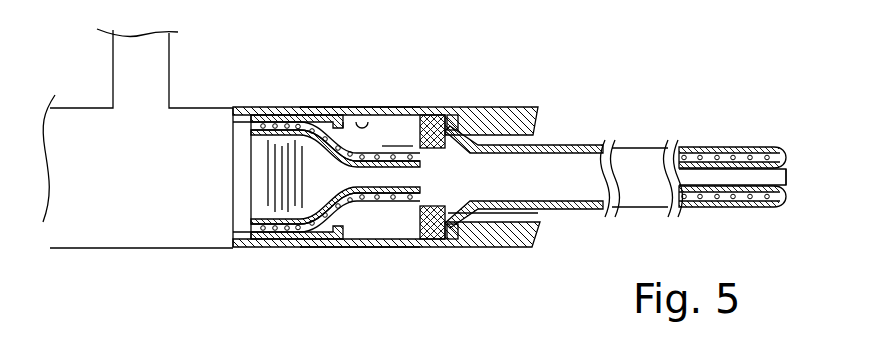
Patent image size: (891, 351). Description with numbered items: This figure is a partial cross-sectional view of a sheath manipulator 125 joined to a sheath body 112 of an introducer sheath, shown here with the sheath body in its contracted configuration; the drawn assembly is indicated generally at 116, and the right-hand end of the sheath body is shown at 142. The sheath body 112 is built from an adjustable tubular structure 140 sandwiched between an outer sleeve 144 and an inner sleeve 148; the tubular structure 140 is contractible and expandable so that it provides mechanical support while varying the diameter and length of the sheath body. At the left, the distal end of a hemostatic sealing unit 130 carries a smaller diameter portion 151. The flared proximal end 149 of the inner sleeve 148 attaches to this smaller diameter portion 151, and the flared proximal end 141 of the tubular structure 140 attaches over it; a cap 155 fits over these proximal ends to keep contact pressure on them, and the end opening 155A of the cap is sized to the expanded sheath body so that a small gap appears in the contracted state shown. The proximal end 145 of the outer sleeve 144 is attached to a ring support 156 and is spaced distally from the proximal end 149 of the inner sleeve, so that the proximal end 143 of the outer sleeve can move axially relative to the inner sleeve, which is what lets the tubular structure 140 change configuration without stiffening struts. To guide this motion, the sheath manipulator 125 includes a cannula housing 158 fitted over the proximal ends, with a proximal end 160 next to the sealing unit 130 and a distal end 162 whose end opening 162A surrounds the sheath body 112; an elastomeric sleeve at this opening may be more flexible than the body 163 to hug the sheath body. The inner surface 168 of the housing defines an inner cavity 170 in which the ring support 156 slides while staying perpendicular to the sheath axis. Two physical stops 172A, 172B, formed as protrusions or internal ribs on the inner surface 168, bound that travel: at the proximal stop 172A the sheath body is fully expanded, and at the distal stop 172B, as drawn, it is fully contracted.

The sheath body 112 is at (639, 165).
The connector assembly 116 is at (810, 157).
The sheath manipulator 125 is at (408, 52).
The hemostatic sealing unit 130 is at (199, 128).
The adjustable tubular structure 140 is at (373, 198).
The proximal end of the tubular structure 141 is at (259, 240).
The connector end 142 is at (773, 145).
The proximal end of the outer sleeve 143 is at (440, 118).
The outer sleeve 144 is at (572, 147).
The proximal end of the outer sleeve 145 is at (785, 202).
The inner sleeve 148 is at (395, 200).
The proximal end of the inner sleeve 149 is at (251, 213).
The smaller diameter portion 151 is at (270, 140).
The cap 155 is at (308, 239).
The end opening of the cap 155A is at (386, 125).
The ring support 156 is at (437, 237).
The cannula housing 158 is at (350, 247).
The proximal end of the cannula housing 160 is at (233, 247).
The distal end of the cannula housing 162 is at (532, 245).
The end opening of the cannula housing 162A is at (538, 213).
The body 163 is at (304, 118).
The inner surface of the cannula housing 168 is at (372, 131).
The inner cavity 170 is at (402, 135).
The first physical stop 172A is at (342, 123).
The second physical stop 172B is at (451, 116).